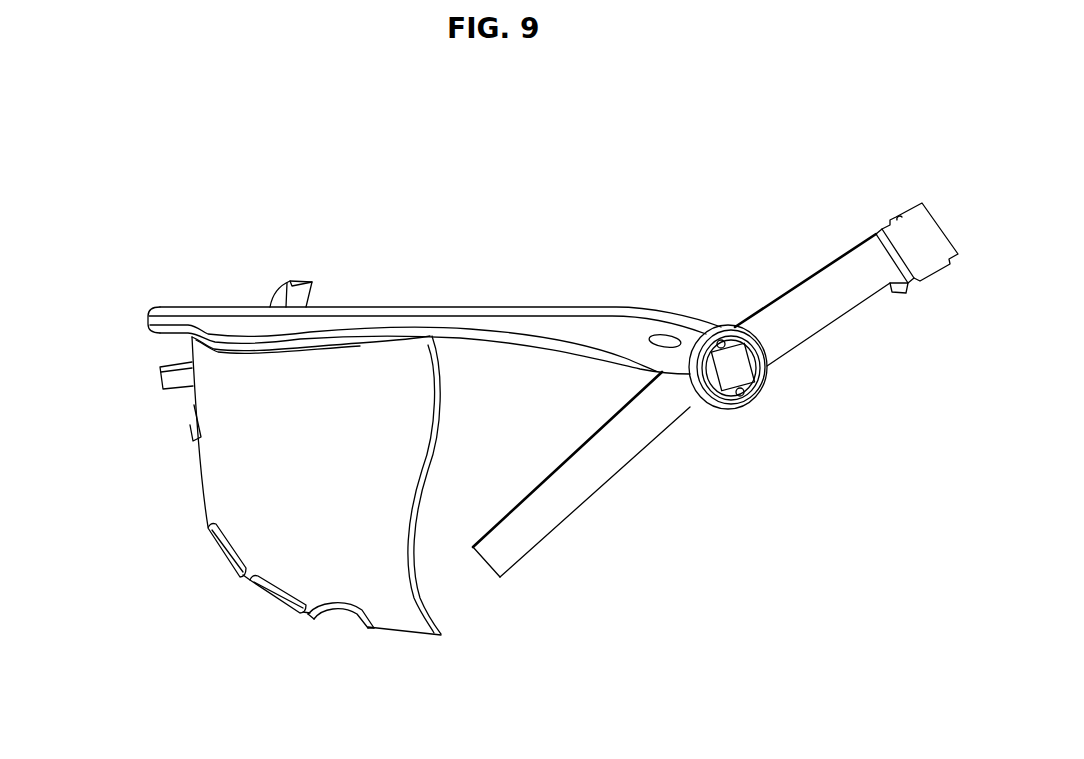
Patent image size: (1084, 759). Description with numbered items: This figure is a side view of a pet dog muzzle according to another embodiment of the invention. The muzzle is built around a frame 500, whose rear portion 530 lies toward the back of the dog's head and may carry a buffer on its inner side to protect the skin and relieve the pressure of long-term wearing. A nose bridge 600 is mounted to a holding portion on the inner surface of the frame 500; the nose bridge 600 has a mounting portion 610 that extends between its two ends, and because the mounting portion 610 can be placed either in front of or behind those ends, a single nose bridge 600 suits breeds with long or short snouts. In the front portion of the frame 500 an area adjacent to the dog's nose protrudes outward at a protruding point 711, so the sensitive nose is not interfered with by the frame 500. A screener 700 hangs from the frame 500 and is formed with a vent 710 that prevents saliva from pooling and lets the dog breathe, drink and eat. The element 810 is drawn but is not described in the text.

The frame 500 is at (517, 294).
The rear portion 530 is at (622, 331).
The nose bridge 600 is at (314, 271).
The mounting portion 610 is at (284, 298).
The screener 700 is at (402, 626).
The vent 710 is at (185, 352).
The protruding point 711 is at (150, 317).
The tube 810 is at (603, 472).